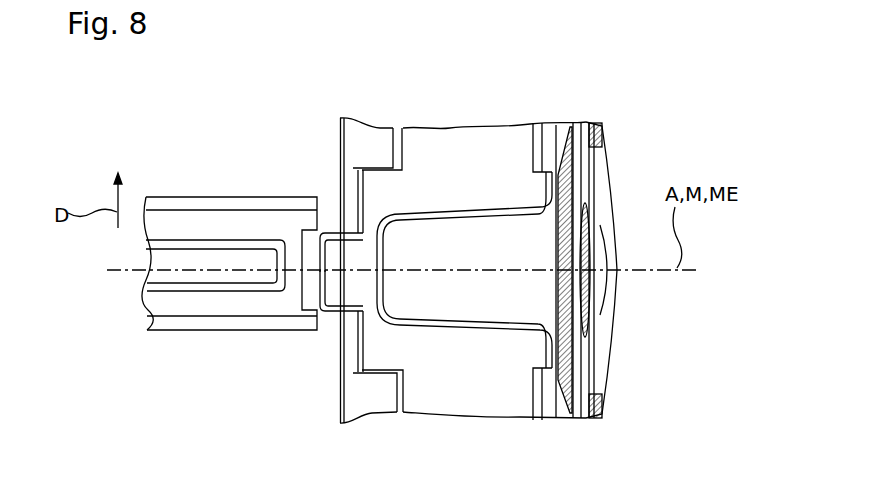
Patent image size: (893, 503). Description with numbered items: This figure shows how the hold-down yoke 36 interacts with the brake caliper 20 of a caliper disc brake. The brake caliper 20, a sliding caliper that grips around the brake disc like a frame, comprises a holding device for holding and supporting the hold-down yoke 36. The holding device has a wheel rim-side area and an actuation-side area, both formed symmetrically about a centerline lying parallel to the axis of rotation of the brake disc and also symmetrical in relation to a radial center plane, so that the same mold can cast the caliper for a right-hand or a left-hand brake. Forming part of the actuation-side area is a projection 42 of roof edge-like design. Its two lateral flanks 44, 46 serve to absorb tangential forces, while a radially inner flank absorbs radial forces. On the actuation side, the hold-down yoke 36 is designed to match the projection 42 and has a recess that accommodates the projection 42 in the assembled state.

The brake caliper 20 is at (450, 143).
The hold-down yoke 36 is at (122, 298).
The projection 42 is at (345, 288).
The lateral flank 44 is at (330, 233).
The lateral flank 46 is at (330, 313).